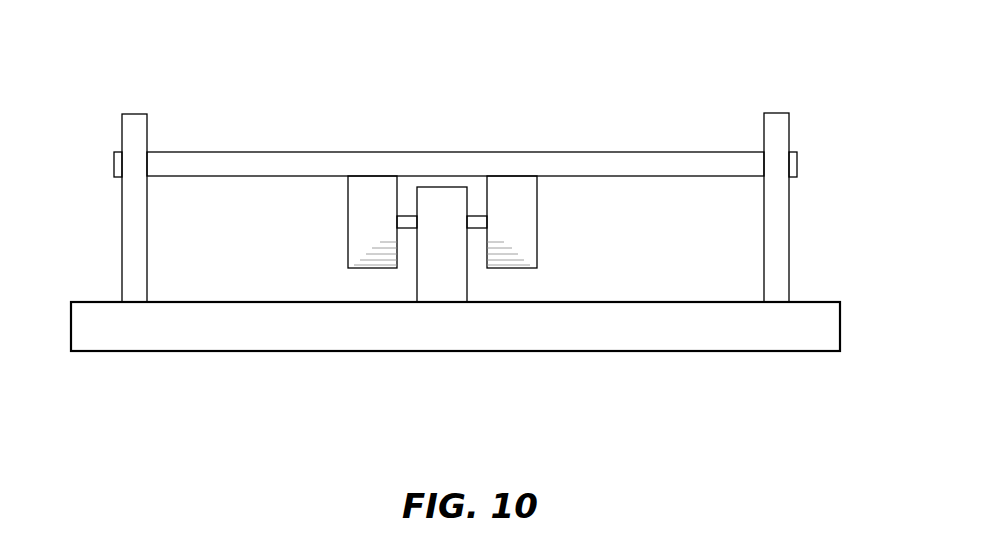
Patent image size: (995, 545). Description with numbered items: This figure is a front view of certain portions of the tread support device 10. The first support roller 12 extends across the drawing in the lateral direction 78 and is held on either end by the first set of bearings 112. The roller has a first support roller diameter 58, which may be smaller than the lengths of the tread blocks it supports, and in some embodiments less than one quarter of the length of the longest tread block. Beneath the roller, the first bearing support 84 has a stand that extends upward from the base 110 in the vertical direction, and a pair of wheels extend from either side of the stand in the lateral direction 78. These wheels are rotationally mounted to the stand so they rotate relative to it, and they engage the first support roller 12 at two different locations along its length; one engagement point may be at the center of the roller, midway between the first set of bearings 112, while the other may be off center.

The tread support device 10 is at (136, 57).
The first support roller 12 is at (623, 168).
The first support roller diameter 58 is at (232, 208).
The lateral direction 78 is at (574, 377).
The first bearing support 84 is at (456, 257).
The base 110 is at (672, 337).
The first set of bearings 112 is at (118, 160).